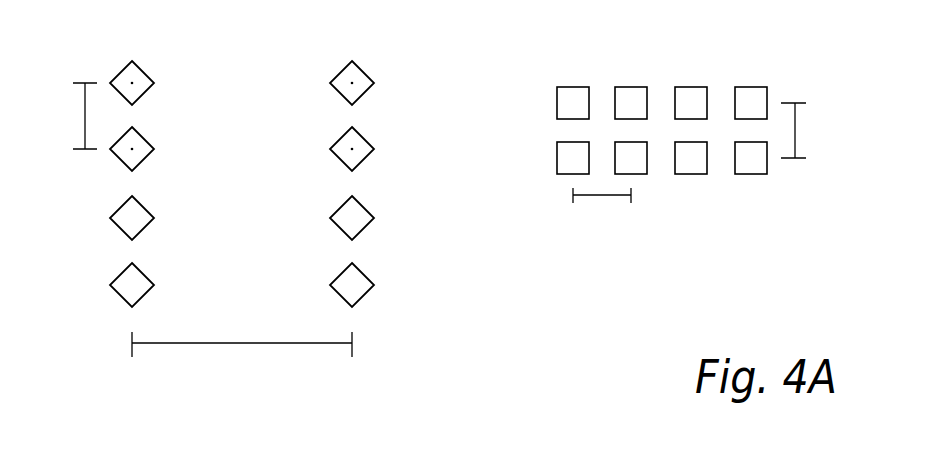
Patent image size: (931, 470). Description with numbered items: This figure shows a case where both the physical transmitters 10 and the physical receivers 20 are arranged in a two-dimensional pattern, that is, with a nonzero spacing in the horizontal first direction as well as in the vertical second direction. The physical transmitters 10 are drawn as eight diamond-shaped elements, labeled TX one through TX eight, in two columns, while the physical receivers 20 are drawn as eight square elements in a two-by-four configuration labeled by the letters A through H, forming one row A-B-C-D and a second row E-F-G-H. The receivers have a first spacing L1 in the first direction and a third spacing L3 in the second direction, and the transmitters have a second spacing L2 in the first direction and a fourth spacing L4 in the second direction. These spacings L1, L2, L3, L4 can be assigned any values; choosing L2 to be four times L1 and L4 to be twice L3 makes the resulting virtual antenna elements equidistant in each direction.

The physical transmitters 10 is at (303, 167).
The physical receivers 20 is at (556, 152).
The first spacing L1 is at (602, 208).
The second spacing L2 is at (242, 357).
The third spacing L3 is at (806, 130).
The fourth spacing L4 is at (70, 116).